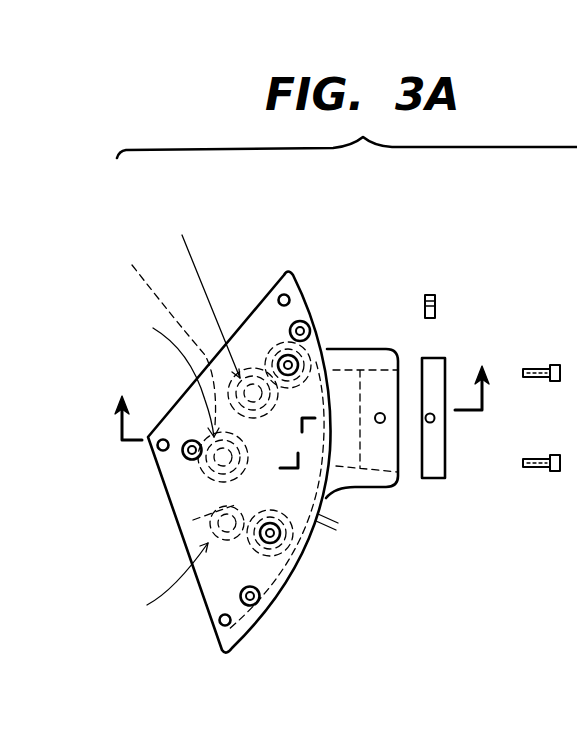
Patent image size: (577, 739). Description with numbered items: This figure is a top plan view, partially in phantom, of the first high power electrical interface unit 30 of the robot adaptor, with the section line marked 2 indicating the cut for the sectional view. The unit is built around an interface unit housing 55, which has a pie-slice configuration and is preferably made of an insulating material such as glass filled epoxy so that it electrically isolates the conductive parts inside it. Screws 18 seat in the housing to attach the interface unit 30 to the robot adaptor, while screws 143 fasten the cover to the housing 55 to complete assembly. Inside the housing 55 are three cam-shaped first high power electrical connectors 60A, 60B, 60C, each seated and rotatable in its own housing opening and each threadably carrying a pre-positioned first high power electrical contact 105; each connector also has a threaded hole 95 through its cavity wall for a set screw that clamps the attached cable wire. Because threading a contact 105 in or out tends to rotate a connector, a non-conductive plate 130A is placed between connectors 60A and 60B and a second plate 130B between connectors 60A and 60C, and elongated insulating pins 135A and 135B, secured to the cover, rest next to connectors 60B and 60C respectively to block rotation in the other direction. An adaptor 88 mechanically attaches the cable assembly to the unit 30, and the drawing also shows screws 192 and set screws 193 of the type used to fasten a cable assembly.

The first high power electrical interface unit 30 is at (172, 615).
The screws 18 is at (289, 298).
The screws 143 is at (311, 324).
The elongated pin 135A is at (283, 356).
The elongated pin 135B is at (284, 543).
The first high power electrical connector 60A is at (200, 487).
The first high power electrical connector 60B is at (247, 365).
The first high power electrical connector 60C is at (198, 548).
The non-conductive plate 130A is at (151, 331).
The non-conductive plate 130B is at (193, 520).
The first high power electrical contact 105 is at (168, 411).
The threaded hole 95 is at (334, 342).
The interface unit housing 55 is at (352, 478).
The adaptor 88 is at (433, 480).
The set screws 193 is at (429, 290).
The screws 192 is at (537, 458).
The section view arrows 2 is at (302, 391).